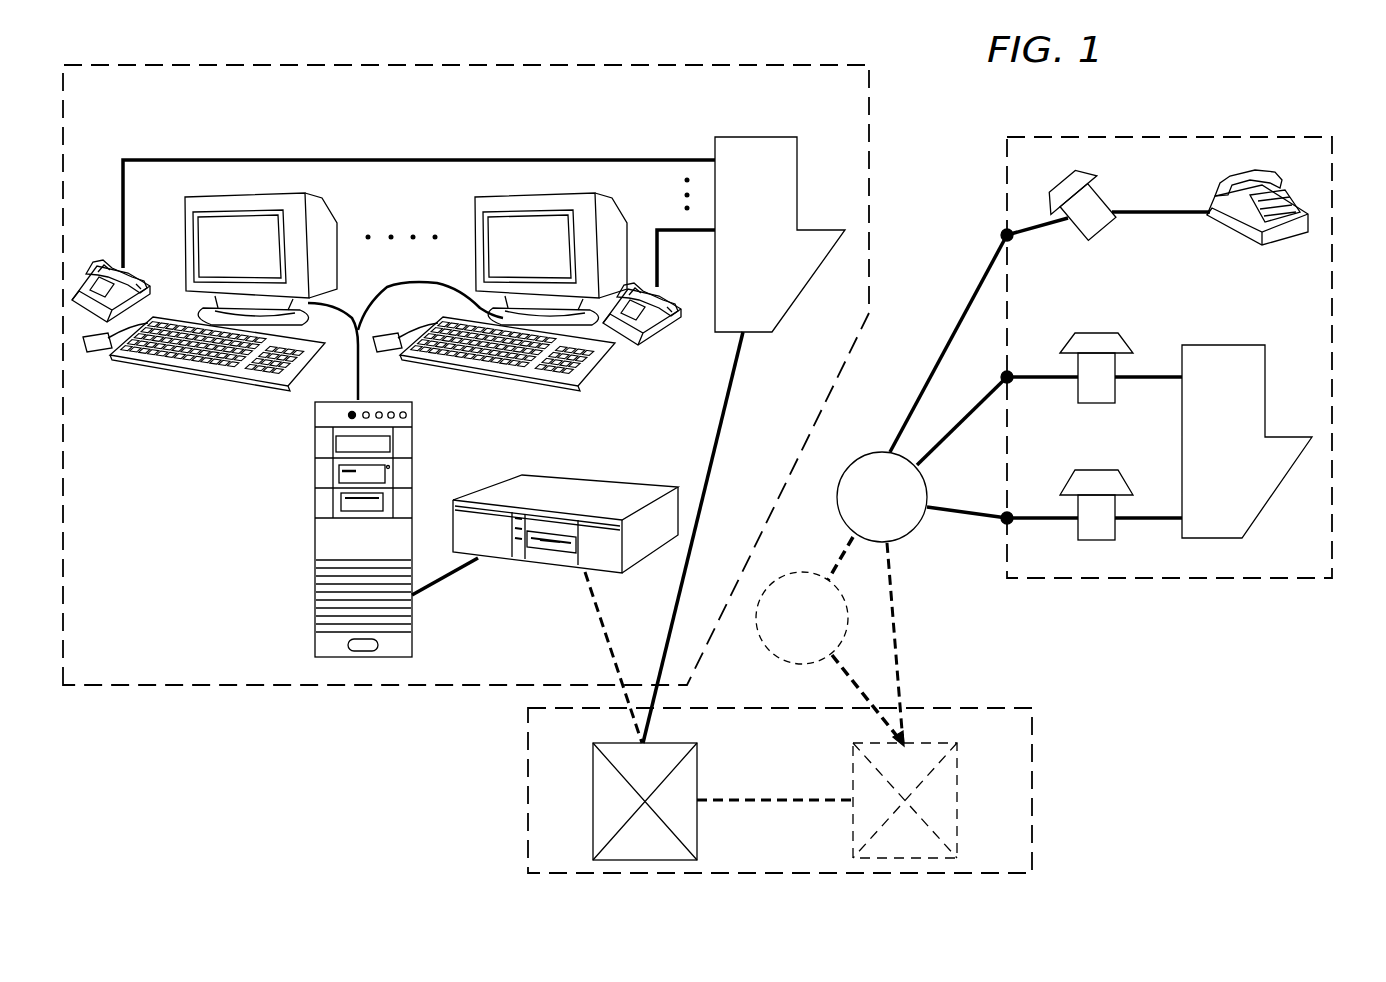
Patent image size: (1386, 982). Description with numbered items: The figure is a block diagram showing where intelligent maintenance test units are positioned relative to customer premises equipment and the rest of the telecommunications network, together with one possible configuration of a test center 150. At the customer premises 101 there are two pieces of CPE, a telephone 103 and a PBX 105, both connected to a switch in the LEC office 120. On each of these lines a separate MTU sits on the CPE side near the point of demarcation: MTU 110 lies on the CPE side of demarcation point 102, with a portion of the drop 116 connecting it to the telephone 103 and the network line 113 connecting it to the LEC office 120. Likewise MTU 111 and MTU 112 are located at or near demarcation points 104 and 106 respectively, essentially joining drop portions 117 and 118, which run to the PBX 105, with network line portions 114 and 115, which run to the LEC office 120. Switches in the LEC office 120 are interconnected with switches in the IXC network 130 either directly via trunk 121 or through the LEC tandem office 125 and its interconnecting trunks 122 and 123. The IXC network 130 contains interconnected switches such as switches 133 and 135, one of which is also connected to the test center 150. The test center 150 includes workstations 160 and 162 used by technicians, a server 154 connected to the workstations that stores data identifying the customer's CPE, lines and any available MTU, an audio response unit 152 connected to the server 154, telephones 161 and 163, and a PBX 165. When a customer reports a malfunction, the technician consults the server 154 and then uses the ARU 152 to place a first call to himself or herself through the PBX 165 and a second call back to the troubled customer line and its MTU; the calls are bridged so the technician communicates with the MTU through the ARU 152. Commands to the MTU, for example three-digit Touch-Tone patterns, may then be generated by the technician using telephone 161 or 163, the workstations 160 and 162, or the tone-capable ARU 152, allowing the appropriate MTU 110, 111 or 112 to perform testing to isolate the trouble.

The customer premises 101 is at (1198, 137).
The demarcation point 102 is at (1003, 226).
The telephone 103 is at (1265, 244).
The demarcation point 104 is at (1011, 370).
The PBX 105 is at (1205, 345).
The demarcation point 106 is at (1012, 510).
The MTU 110 is at (1103, 238).
The MTU 111 is at (1095, 404).
The MTU 112 is at (1078, 540).
The network line 113 is at (948, 337).
The network line portion 114 is at (955, 435).
The network line portion 115 is at (963, 517).
The drop 116 is at (1133, 208).
The drop portion 117 is at (1150, 374).
The drop portion 118 is at (1148, 515).
The LEC office 120 is at (878, 455).
The trunk 121 is at (900, 651).
The interconnecting trunk 122 is at (845, 551).
The interconnecting trunk 123 is at (860, 690).
The LEC tandem office 125 is at (775, 657).
The IXC network 130 is at (1032, 796).
The switch 133 is at (957, 781).
The switch 135 is at (593, 779).
The test center 150 is at (869, 76).
The audio response unit 152 is at (557, 475).
The server 154 is at (315, 522).
The workstation 160 is at (312, 200).
The telephone 161 is at (135, 272).
The workstation 162 is at (476, 200).
The telephone 163 is at (655, 346).
The PBX 165 is at (733, 137).